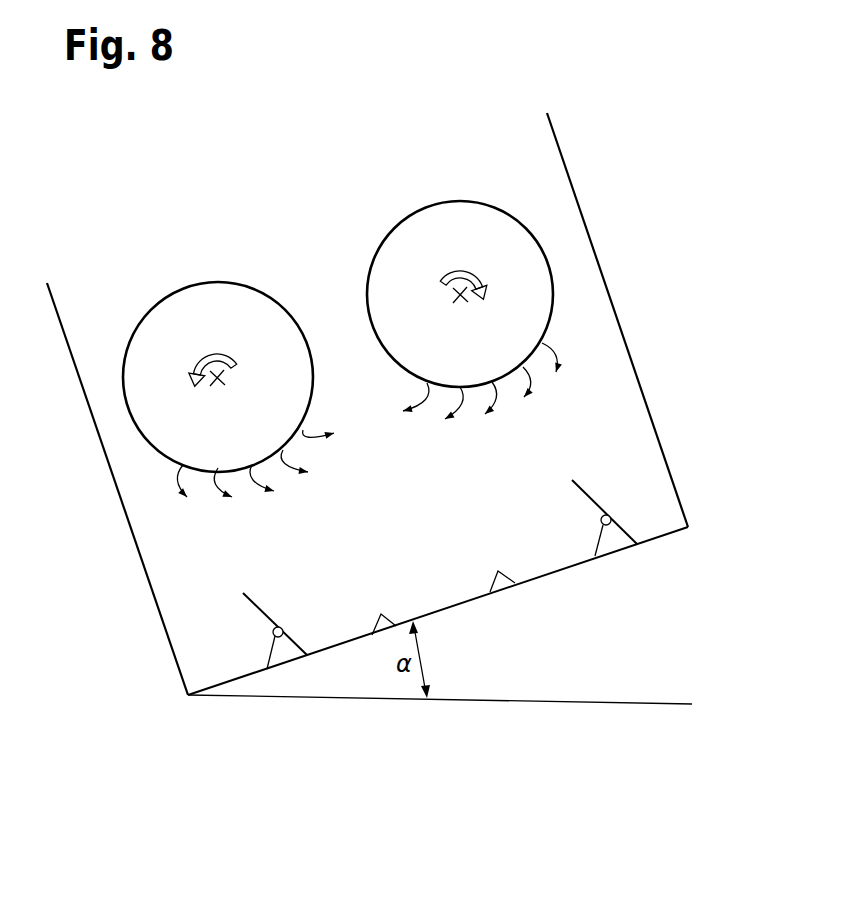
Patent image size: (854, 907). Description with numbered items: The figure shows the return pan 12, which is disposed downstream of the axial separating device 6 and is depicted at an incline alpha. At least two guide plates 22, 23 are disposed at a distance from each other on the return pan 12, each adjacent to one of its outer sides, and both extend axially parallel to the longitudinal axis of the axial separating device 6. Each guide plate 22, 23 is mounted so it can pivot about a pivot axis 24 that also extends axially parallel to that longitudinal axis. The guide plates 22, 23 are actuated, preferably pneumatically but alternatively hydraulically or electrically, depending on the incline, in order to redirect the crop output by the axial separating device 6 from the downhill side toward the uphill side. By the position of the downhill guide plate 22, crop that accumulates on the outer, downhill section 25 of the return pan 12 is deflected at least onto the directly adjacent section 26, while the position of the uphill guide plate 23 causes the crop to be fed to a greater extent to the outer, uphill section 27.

The axial separating device 6 is at (368, 222).
The return pan 12 is at (203, 697).
The guide plate 22 is at (276, 626).
The guide plate 23 is at (596, 508).
The pivot axis 24 is at (283, 628).
The outer, downhill section 25 is at (242, 678).
The section 26 is at (340, 646).
The outer, uphill section 27 is at (670, 532).